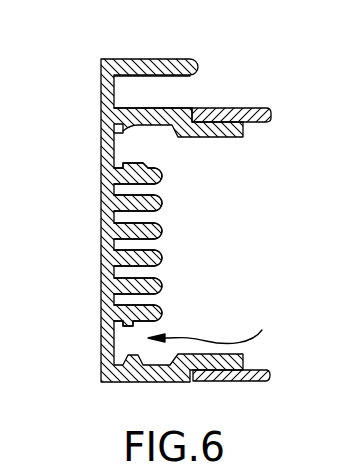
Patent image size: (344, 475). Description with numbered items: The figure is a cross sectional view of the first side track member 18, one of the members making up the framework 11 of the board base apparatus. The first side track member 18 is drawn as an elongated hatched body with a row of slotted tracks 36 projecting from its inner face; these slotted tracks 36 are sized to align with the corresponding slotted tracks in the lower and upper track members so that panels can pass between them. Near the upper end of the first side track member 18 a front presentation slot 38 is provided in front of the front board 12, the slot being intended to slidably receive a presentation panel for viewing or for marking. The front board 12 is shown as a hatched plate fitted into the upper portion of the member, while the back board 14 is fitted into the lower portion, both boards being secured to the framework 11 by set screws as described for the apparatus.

The first side track member 18 is at (101, 210).
The slotted tracks 36 is at (163, 300).
The front presentation slot 38 is at (163, 93).
The front board 12 is at (264, 107).
The back board 14 is at (252, 382).
The framework 11 is at (214, 322).